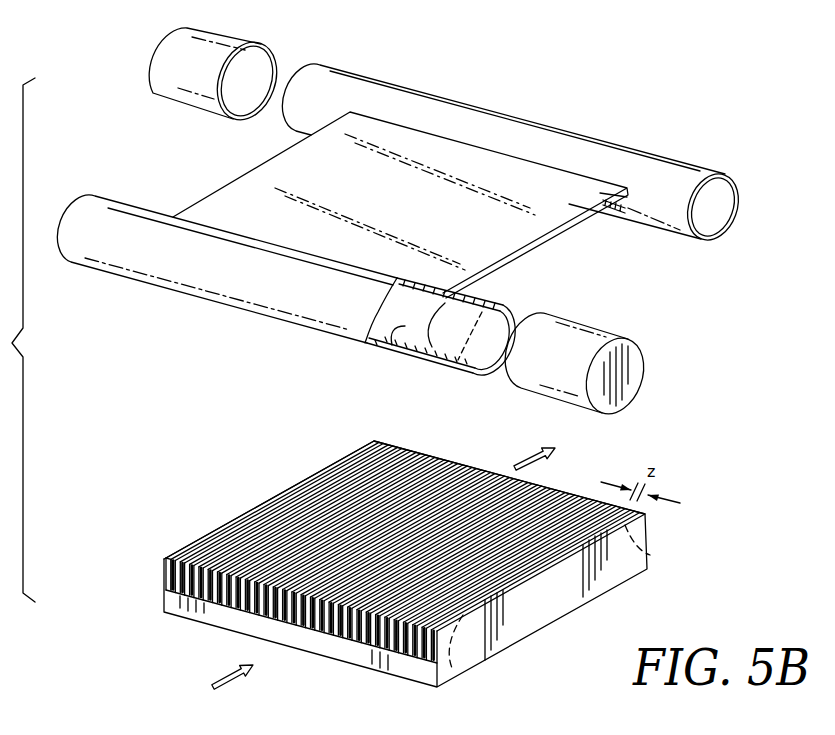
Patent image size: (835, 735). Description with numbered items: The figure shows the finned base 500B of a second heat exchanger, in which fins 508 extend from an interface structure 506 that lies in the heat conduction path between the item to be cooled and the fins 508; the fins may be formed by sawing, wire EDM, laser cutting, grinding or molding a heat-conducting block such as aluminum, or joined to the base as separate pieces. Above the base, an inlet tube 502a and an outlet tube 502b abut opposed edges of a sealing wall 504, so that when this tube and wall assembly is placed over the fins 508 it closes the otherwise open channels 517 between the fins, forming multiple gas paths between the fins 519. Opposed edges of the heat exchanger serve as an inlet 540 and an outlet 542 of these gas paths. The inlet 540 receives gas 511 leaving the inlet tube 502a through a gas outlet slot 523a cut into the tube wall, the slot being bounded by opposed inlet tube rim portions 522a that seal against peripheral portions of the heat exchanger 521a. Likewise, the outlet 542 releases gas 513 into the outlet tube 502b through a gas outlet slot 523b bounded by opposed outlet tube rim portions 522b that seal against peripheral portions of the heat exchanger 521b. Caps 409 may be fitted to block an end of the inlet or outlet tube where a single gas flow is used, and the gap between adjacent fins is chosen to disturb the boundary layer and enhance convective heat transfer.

The finned base 500B is at (522, 72).
The cap 409 is at (156, 96).
The inlet tube 502a is at (89, 217).
The outlet tube 502b is at (360, 90).
The sealing wall 504 is at (265, 162).
The interface structure 506 is at (363, 652).
The fins 508 is at (304, 622).
The gas 511 is at (210, 677).
The gas 513 is at (514, 466).
The channels 517 is at (218, 538).
The fins 519 is at (170, 583).
The peripheral portions of the heat exchanger 521a is at (455, 676).
The peripheral portions of the heat exchanger 521b is at (655, 553).
The inlet tube rim portions 522a is at (433, 347).
The outlet tube rim portions 522b is at (624, 200).
The gas outlet slot 523a is at (392, 330).
The gas outlet slot 523b is at (602, 197).
The inlet 540 is at (300, 600).
The outlet 542 is at (572, 490).